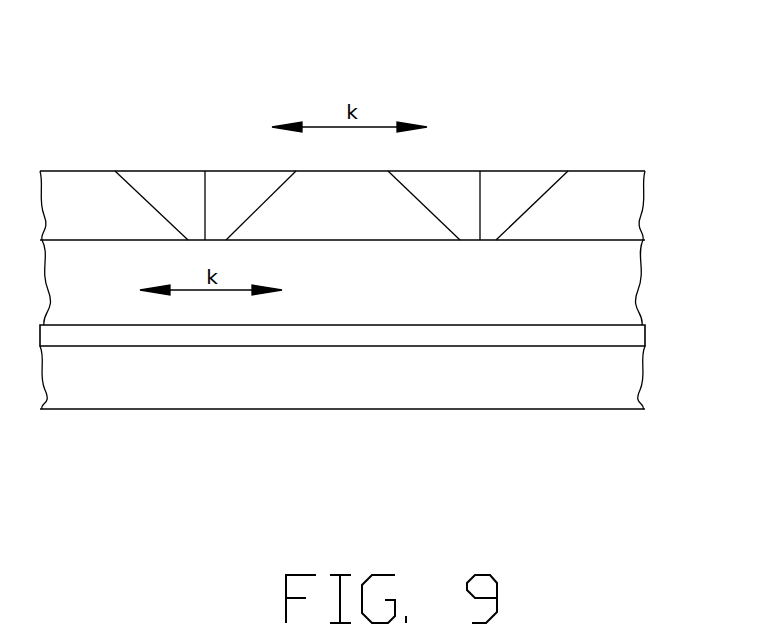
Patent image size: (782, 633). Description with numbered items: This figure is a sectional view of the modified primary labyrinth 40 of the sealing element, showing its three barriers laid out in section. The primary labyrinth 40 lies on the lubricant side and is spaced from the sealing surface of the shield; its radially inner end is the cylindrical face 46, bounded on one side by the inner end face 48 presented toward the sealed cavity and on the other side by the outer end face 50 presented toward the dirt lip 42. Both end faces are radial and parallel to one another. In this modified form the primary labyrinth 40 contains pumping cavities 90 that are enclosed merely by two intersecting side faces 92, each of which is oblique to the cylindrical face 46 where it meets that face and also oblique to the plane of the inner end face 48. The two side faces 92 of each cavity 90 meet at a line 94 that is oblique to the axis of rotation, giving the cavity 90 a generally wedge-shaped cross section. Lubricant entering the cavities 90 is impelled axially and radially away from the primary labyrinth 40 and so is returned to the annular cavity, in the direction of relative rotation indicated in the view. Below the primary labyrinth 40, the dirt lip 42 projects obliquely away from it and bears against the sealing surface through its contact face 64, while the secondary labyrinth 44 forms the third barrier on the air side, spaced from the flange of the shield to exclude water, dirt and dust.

The primary labyrinth 40 is at (635, 212).
The dirt lip 42 is at (630, 337).
The secondary labyrinth 44 is at (625, 390).
The cylindrical face 46 is at (65, 193).
The inner end face 48 is at (616, 171).
The outer end face 50 is at (568, 241).
The contact face 64 is at (368, 335).
The pumping cavities 90 is at (240, 188).
The side faces 92 is at (148, 191).
The line 94 is at (205, 200).